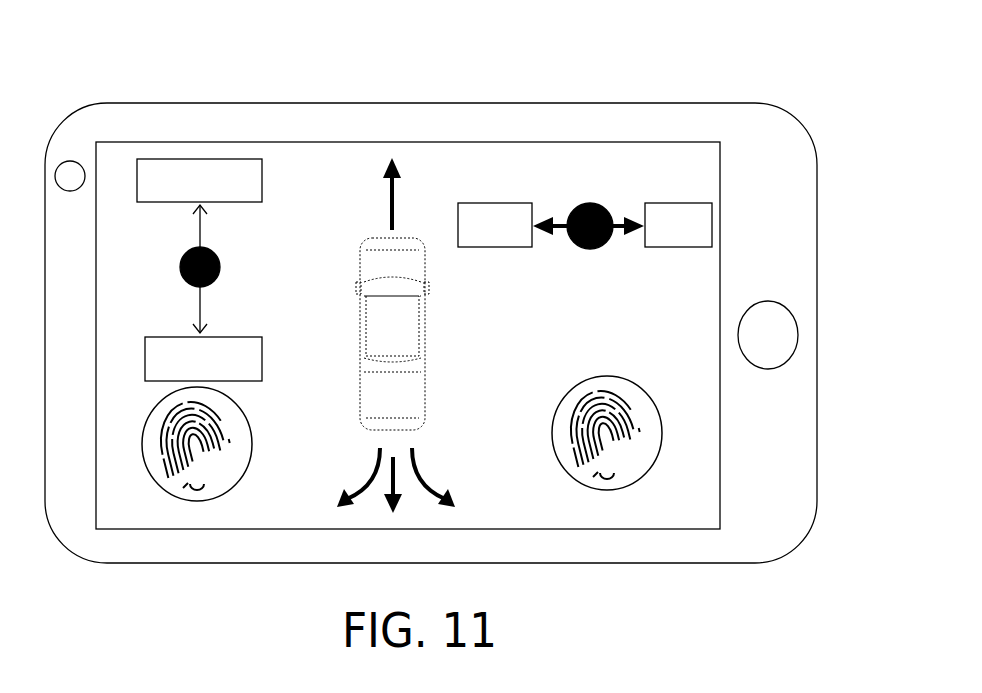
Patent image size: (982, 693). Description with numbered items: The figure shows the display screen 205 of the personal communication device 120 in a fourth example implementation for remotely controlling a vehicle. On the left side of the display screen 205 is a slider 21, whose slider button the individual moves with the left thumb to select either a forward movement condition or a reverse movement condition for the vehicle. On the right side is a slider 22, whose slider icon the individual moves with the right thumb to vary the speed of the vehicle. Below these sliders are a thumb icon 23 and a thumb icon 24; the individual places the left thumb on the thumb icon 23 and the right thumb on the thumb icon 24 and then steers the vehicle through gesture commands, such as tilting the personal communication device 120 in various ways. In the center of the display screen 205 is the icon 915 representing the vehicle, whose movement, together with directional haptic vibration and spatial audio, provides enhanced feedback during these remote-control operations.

The personal communication device 120 is at (327, 103).
The display screen 205 is at (310, 182).
The slider 21 is at (229, 252).
The slider 22 is at (581, 262).
The thumb icon 23 is at (259, 414).
The thumb icon 24 is at (657, 384).
The icon 915 is at (443, 338).